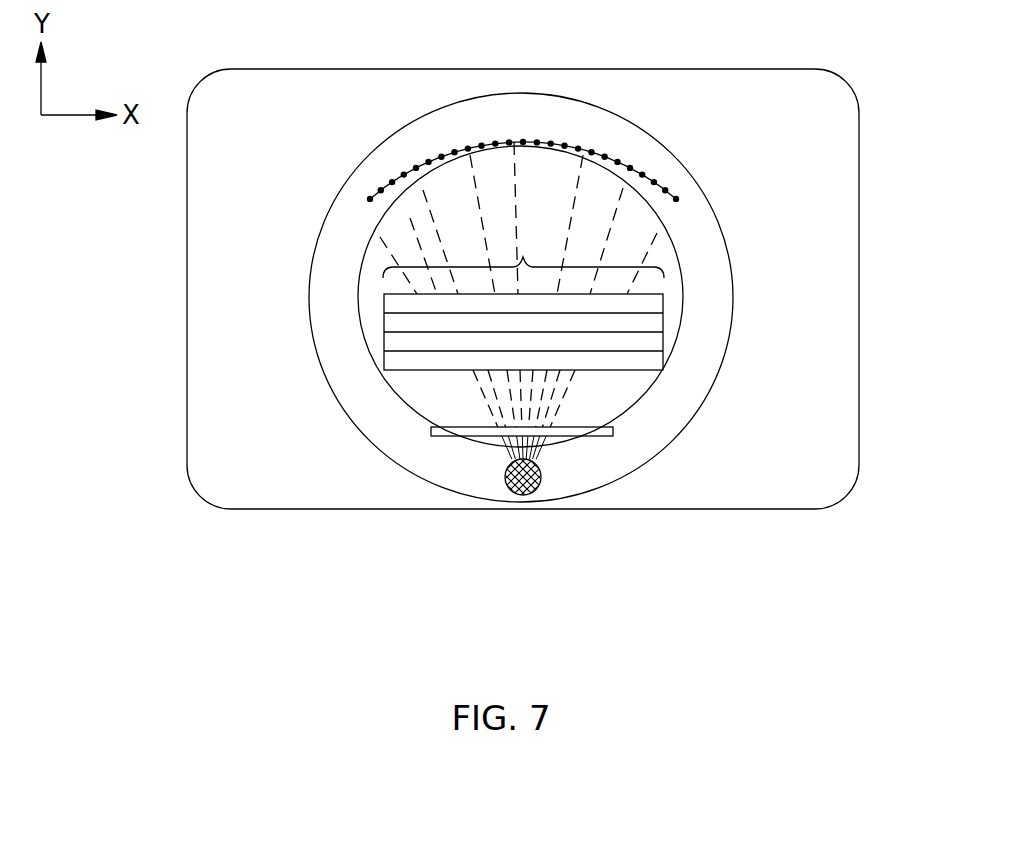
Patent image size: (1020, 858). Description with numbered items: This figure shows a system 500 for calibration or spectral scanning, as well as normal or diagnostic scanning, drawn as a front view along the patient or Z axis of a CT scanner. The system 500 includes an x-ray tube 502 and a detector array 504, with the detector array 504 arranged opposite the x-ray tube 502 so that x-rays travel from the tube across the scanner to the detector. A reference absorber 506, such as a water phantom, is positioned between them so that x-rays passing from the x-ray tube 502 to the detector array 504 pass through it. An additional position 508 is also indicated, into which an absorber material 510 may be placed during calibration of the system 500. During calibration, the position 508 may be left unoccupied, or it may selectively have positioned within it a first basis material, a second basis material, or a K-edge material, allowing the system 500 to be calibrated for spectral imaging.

The system 500 is at (803, 60).
The x-ray tube 502 is at (540, 488).
The detector array 504 is at (438, 147).
The reference absorber 506 is at (663, 322).
The additional position 508 is at (666, 432).
The absorber material 510 is at (470, 436).